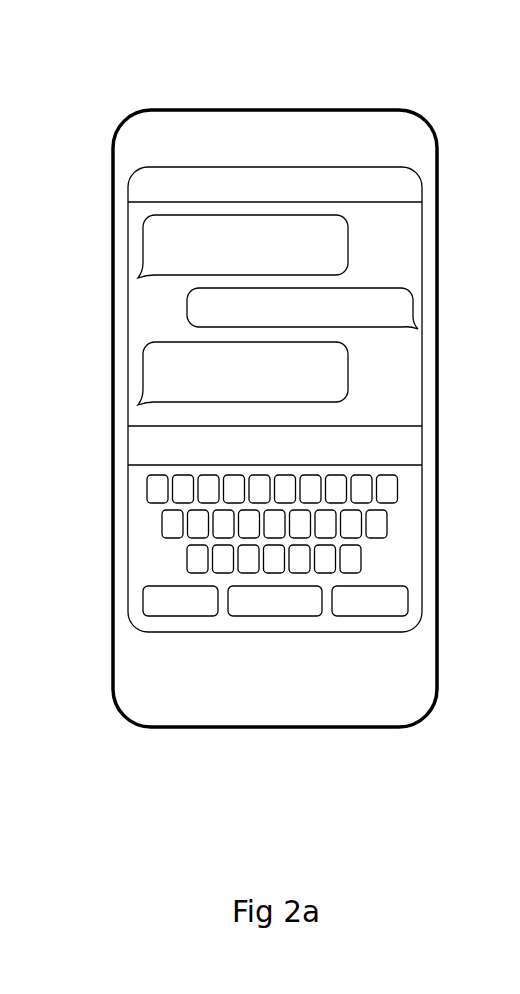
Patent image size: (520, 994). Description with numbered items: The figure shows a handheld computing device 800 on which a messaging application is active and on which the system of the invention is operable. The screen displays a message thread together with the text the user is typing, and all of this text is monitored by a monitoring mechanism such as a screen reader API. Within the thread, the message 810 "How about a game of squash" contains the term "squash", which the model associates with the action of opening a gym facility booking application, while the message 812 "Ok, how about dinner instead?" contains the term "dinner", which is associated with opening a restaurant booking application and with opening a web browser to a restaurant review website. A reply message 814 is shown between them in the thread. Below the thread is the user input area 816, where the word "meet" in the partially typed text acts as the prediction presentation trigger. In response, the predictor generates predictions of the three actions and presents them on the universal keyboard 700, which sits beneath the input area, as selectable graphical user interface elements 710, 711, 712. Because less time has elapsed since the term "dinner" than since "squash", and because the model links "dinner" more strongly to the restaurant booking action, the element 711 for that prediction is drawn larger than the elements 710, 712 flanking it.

The device 800 is at (168, 127).
The message 810 is at (143, 247).
The message 812 is at (143, 377).
The received message bubble 814 is at (346, 289).
The user input area 816 is at (319, 479).
The universal keyboard 700 is at (145, 544).
The user interface element 710 is at (182, 616).
The user interface element 711 is at (273, 616).
The user interface element 712 is at (371, 616).